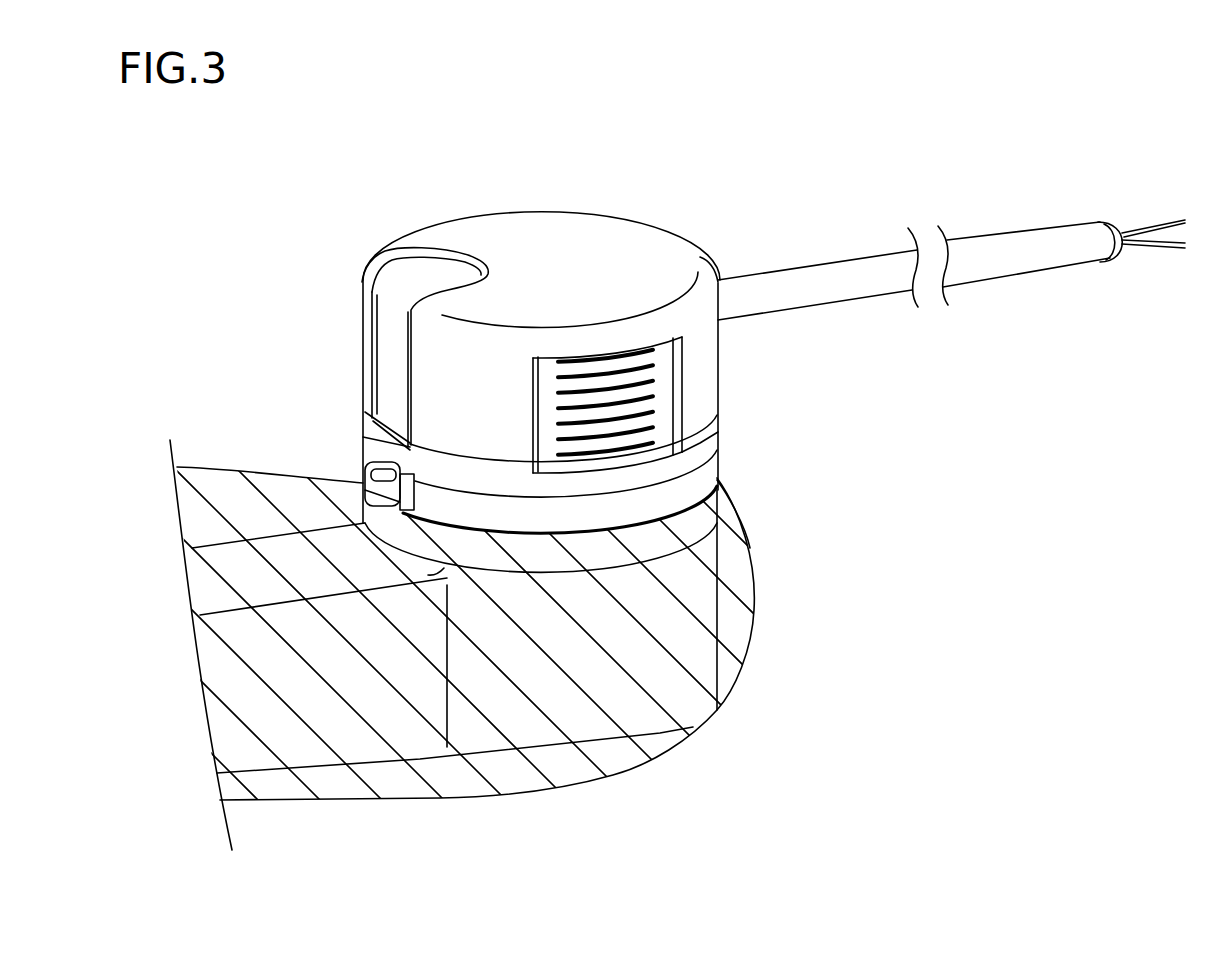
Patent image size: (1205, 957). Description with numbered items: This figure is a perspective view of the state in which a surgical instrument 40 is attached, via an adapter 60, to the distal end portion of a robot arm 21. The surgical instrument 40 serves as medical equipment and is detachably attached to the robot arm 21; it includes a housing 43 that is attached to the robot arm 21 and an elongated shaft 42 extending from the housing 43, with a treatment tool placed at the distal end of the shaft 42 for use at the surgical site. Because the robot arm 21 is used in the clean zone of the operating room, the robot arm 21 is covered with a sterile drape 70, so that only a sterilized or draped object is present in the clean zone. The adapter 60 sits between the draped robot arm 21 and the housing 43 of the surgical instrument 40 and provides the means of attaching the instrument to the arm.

The surgical instrument 40 is at (773, 329).
The housing 43 is at (525, 230).
The shaft 42 is at (1008, 268).
The adapter 60 is at (708, 455).
The drape 70 is at (743, 597).
The robot arm 21 is at (553, 698).